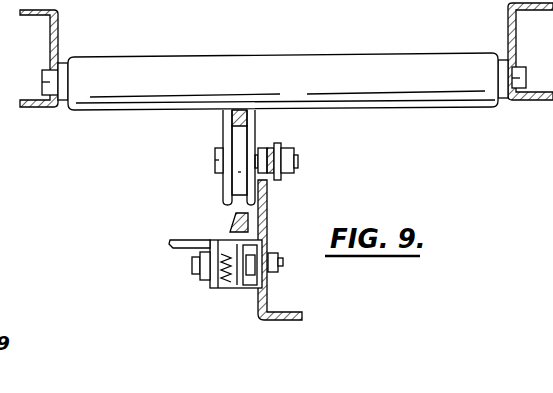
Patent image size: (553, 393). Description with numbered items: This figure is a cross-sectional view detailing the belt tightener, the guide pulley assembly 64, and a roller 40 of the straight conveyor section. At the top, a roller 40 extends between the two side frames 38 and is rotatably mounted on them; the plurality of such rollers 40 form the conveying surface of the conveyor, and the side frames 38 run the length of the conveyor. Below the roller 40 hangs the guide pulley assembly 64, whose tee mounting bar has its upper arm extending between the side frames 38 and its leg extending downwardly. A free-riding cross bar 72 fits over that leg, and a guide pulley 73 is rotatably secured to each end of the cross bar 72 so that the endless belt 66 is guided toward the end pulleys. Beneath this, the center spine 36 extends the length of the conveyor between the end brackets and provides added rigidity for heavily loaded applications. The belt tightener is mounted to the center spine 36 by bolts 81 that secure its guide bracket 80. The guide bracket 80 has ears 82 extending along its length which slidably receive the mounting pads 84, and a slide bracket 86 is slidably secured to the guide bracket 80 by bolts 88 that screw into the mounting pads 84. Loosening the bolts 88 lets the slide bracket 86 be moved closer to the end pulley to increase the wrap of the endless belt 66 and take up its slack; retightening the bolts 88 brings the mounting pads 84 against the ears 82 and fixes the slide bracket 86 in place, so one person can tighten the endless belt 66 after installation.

The center spine 36 is at (268, 196).
The side frame 38 is at (58, 17).
The roller 40 is at (253, 57).
The guide pulley assembly 64 is at (239, 171).
The endless belt 66 is at (228, 118).
The cross bar 72 is at (279, 149).
The guide pulley 73 is at (246, 137).
The guide bracket 80 is at (221, 292).
The bolt 81 is at (284, 263).
The ear 82 is at (222, 284).
The mounting pad 84 is at (248, 289).
The slide bracket 86 is at (170, 244).
The bolt 88 is at (193, 270).